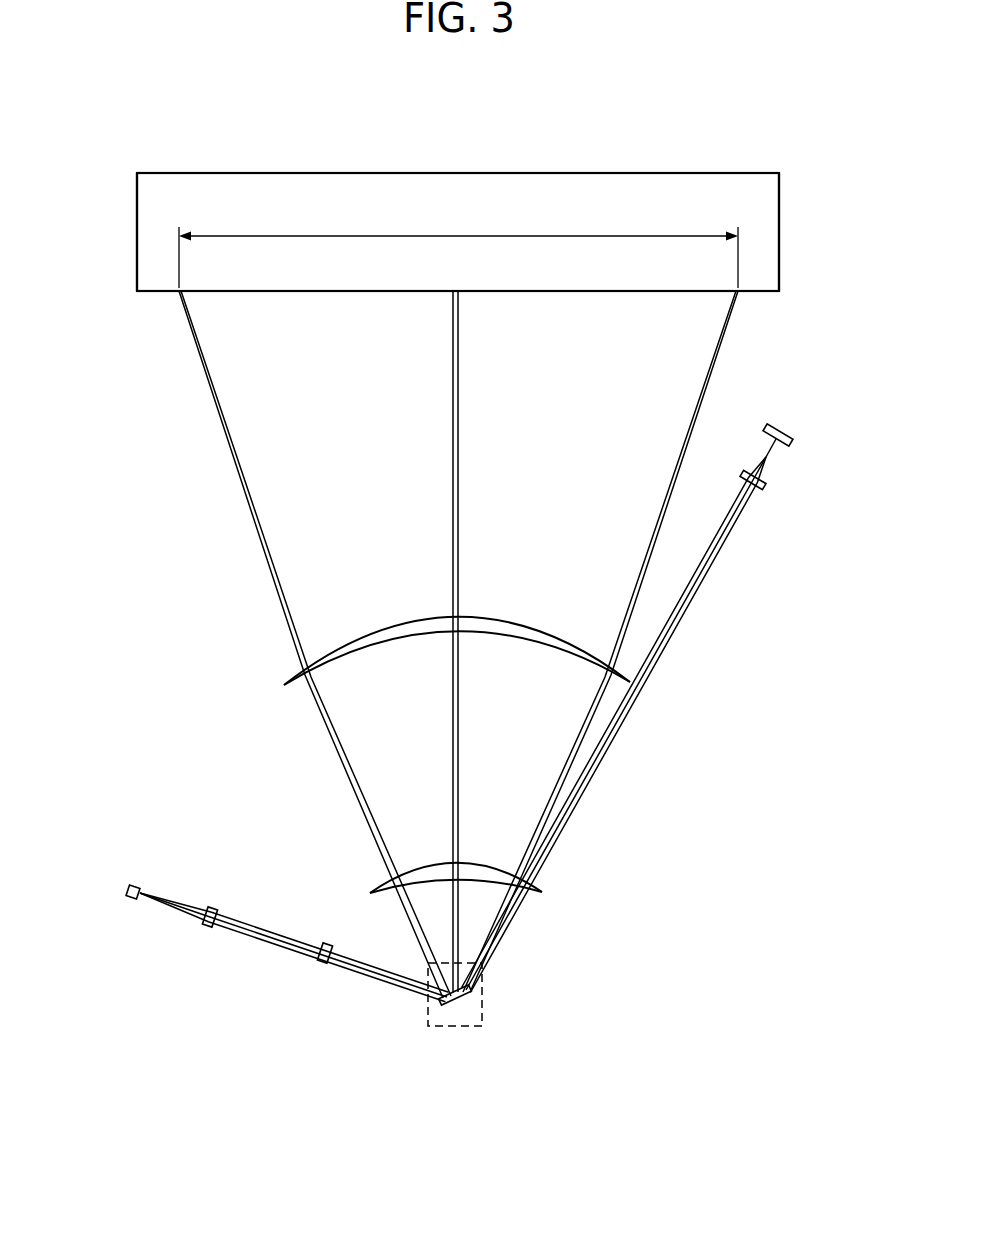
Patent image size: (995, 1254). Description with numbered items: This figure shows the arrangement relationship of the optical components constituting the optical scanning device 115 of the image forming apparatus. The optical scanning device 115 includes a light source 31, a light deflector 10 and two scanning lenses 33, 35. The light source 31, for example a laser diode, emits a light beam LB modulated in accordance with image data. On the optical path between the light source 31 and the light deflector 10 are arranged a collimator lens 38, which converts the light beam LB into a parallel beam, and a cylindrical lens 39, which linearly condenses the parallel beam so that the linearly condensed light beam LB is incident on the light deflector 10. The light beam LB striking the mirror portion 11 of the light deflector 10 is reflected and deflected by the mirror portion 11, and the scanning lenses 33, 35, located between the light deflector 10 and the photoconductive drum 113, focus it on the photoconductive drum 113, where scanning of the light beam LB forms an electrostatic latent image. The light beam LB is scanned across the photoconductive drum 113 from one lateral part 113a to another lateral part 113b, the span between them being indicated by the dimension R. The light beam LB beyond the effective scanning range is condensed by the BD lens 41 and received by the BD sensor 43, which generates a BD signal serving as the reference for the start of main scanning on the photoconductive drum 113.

The light deflector 10 is at (450, 1028).
The mirror portion 11 is at (462, 998).
The light source 31 is at (134, 902).
The scanning lens 33 is at (482, 862).
The scanning lens 35 is at (506, 619).
The collimator lens 38 is at (211, 905).
The cylindrical lens 39 is at (326, 941).
The BD lens 41 is at (760, 487).
The BD sensor 43 is at (780, 427).
The photoconductive drum 113 is at (313, 173).
The one lateral part 113a is at (137, 224).
The another lateral part 113b is at (781, 240).
The optical scanning device 115 is at (131, 712).
The light beam LB is at (210, 380).
The scan range R is at (458, 246).